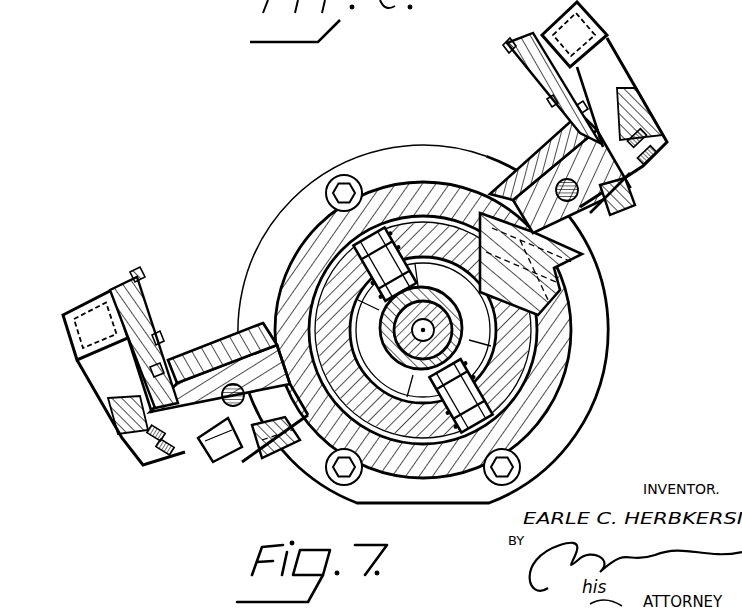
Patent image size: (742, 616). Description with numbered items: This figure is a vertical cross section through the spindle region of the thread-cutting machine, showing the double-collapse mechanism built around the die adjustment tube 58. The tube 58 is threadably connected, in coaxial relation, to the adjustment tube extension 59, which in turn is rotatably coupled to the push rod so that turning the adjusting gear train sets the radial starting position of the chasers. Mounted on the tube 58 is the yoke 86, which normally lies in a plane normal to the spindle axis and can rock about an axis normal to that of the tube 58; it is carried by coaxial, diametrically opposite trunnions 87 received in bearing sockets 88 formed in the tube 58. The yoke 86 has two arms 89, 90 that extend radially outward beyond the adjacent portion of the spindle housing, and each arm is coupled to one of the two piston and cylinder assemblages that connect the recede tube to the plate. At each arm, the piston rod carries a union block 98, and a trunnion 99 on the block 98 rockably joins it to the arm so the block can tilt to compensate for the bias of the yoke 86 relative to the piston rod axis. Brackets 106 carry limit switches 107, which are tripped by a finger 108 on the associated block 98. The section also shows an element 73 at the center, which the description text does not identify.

The die adjustment tube 58 is at (370, 503).
The adjustment tube extension 59 is at (478, 358).
The shaft 73 is at (440, 334).
The yoke 86 is at (258, 270).
The trunnions 87 is at (370, 232).
The bearing sockets 88 is at (413, 282).
The arm 89 is at (298, 423).
The arm 90 is at (563, 263).
The union block 98 is at (637, 167).
The trunnion 99 is at (637, 218).
The brackets 106 is at (220, 343).
The limit switches 107 is at (80, 303).
The finger 108 is at (115, 384).